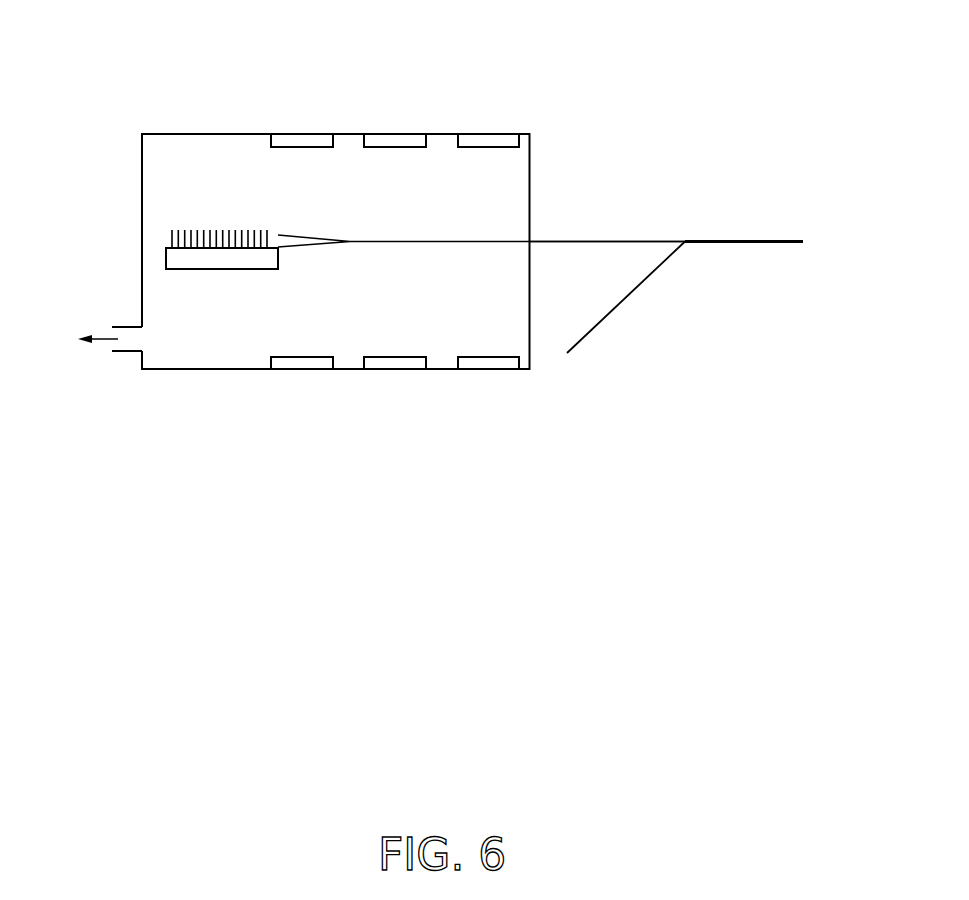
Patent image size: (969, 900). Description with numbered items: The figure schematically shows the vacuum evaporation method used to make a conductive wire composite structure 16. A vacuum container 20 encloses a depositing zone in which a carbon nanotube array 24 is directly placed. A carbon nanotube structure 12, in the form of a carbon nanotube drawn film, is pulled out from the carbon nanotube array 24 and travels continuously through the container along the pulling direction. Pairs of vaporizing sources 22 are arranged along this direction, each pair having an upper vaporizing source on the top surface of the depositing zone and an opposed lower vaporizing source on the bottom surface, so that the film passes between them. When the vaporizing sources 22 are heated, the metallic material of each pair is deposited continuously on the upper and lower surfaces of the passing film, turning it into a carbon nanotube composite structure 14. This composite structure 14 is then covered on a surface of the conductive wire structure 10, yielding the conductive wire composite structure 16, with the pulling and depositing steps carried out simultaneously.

The conductive wire structure 10 is at (623, 300).
The carbon nanotube structure 12 is at (367, 241).
The carbon nanotube composite structure 14 is at (578, 240).
The conductive wire composite structure 16 is at (737, 240).
The vacuum container 20 is at (142, 220).
The vaporizing source 22 is at (472, 140).
The carbon nanotube array 24 is at (187, 233).